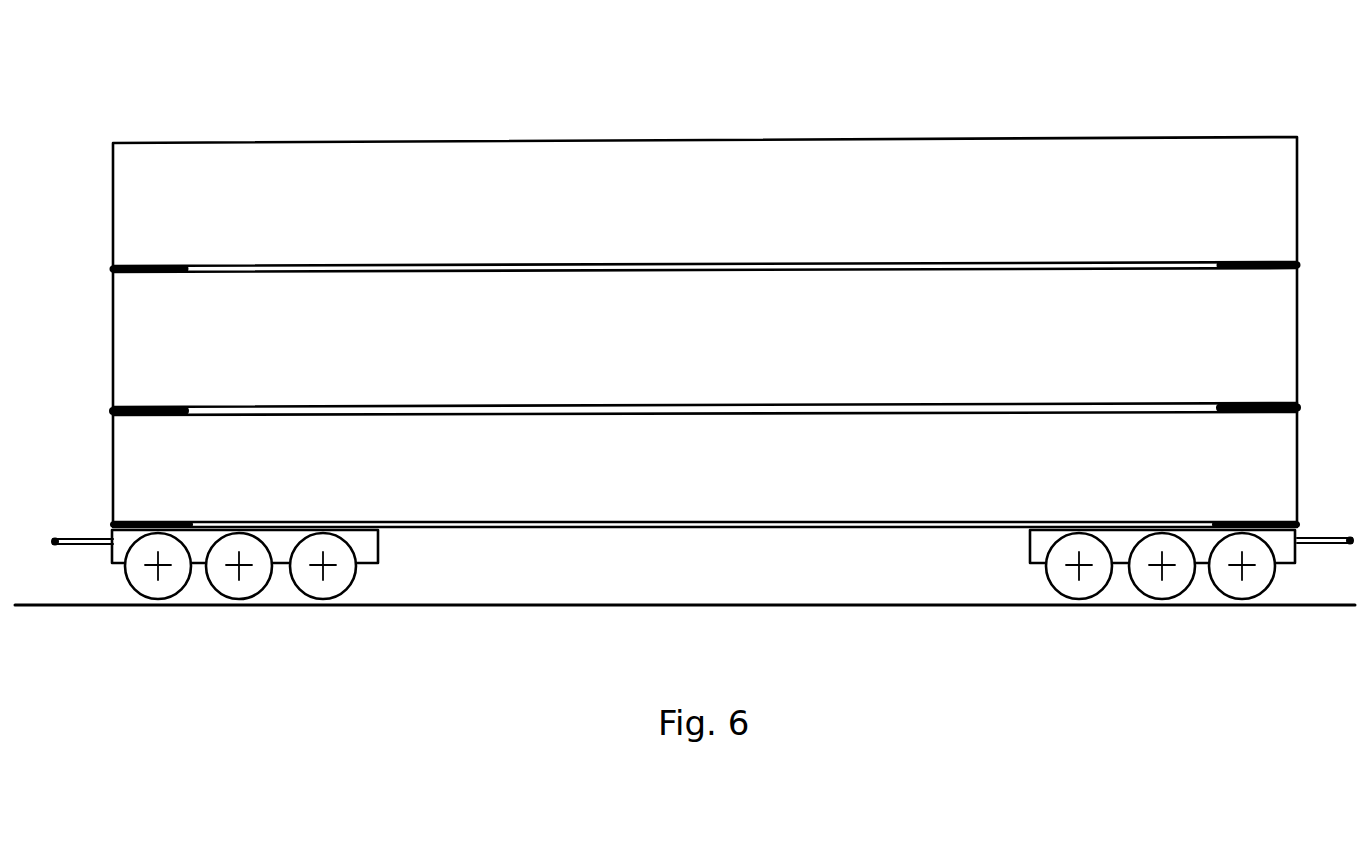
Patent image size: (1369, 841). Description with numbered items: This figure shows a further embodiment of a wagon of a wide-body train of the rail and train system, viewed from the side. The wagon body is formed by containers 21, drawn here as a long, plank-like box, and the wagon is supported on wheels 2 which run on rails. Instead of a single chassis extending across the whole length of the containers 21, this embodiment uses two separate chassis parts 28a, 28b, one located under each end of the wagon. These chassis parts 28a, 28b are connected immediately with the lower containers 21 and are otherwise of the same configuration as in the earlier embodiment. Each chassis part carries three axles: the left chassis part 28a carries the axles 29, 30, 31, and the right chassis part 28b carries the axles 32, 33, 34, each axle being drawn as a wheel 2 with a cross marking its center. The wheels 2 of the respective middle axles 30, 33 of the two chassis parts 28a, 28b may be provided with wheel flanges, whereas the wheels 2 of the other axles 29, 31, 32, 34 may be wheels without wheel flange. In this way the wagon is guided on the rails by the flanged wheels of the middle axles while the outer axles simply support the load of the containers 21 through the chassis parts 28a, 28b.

The container 21 is at (873, 457).
The chassis part 28a is at (368, 582).
The chassis part 28b is at (1040, 572).
The axle 29 is at (152, 568).
The middle axle 30 is at (232, 570).
The axle 31 is at (320, 567).
The axle 32 is at (1077, 572).
The middle axle 33 is at (1162, 572).
The axle 34 is at (1243, 570).
The wheel 2 is at (252, 585).